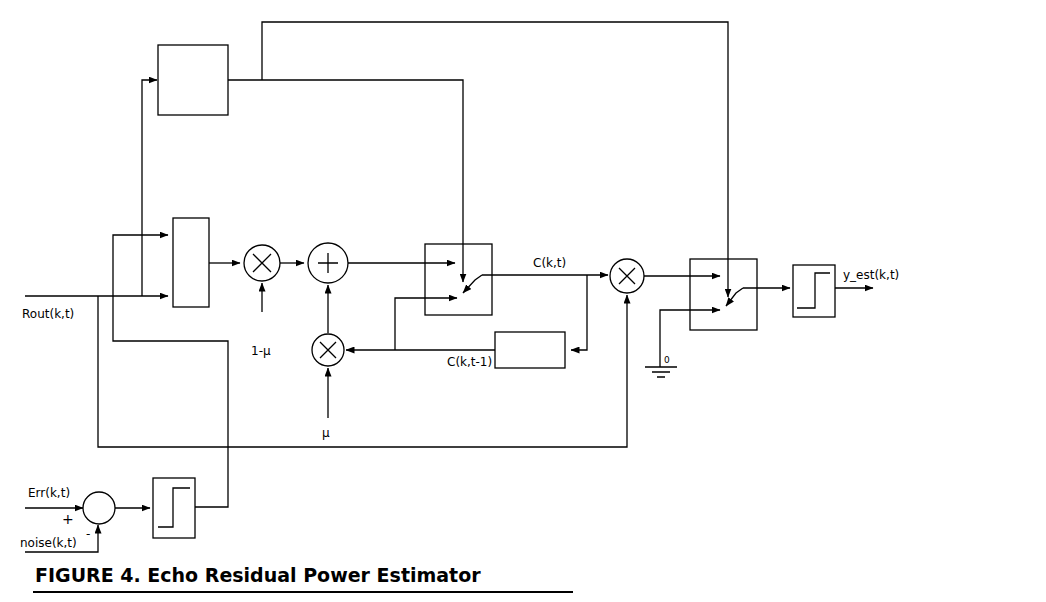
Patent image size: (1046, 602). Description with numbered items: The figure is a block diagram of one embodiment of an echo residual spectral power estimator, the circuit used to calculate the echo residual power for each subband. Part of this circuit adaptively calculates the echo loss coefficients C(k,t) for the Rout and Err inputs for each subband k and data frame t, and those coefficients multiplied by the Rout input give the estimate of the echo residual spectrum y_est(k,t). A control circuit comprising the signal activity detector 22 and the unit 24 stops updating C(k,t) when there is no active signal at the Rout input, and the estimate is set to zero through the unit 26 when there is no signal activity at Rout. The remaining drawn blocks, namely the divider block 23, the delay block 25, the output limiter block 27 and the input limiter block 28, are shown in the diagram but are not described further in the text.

The signal activity detector 22 is at (193, 16).
The divider (a/b) 23 is at (190, 192).
The unit 24 is at (438, 215).
The delay element D 25 is at (520, 304).
The unit 26 is at (703, 230).
The output limiter 27 is at (810, 230).
The input limiter 28 is at (162, 450).